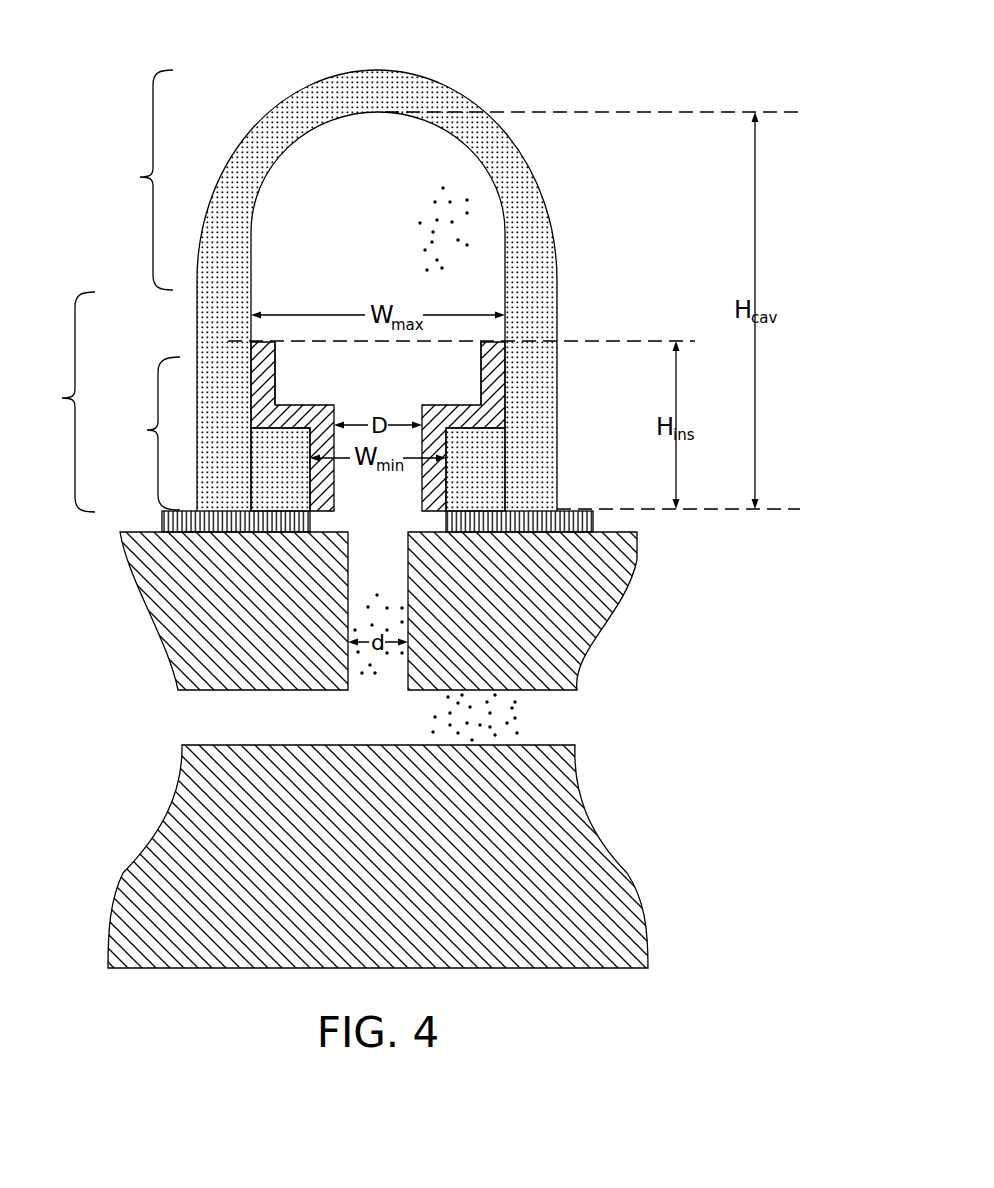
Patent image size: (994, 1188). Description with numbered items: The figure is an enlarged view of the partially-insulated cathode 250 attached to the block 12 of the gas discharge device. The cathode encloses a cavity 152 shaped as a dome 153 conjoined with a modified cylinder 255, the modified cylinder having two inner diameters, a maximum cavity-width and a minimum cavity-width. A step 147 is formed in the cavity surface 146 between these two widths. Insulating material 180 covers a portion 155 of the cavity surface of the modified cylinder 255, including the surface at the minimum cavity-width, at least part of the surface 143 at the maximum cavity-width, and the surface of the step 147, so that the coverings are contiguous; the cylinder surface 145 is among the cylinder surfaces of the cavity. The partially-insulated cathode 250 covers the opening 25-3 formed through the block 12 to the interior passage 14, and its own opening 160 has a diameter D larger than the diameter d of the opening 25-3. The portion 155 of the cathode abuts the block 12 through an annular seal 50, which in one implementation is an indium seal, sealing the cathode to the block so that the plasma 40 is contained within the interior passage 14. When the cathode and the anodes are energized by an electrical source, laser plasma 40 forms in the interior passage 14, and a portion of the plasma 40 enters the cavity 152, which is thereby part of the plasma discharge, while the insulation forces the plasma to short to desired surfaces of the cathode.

The block 12 is at (228, 618).
The interior passage 14 is at (152, 718).
The opening 25-3 is at (380, 698).
The plasma 40 is at (443, 247).
The annular seal 50 is at (160, 527).
The surface of the modified cylinder having the maximum cavity-width 143 is at (250, 403).
The cylinder surface 145 is at (547, 207).
The cavity surface 146 is at (252, 263).
The step 147 is at (273, 430).
The cavity 152 is at (390, 260).
The dome 153 is at (133, 180).
The portion of the cavity surface 155 is at (139, 433).
The opening of the partially-insulated cathode 160 is at (354, 510).
The insulating material 180 is at (275, 392).
The partially-insulated cathode 250 is at (565, 98).
The modified cylinder 255 is at (56, 402).